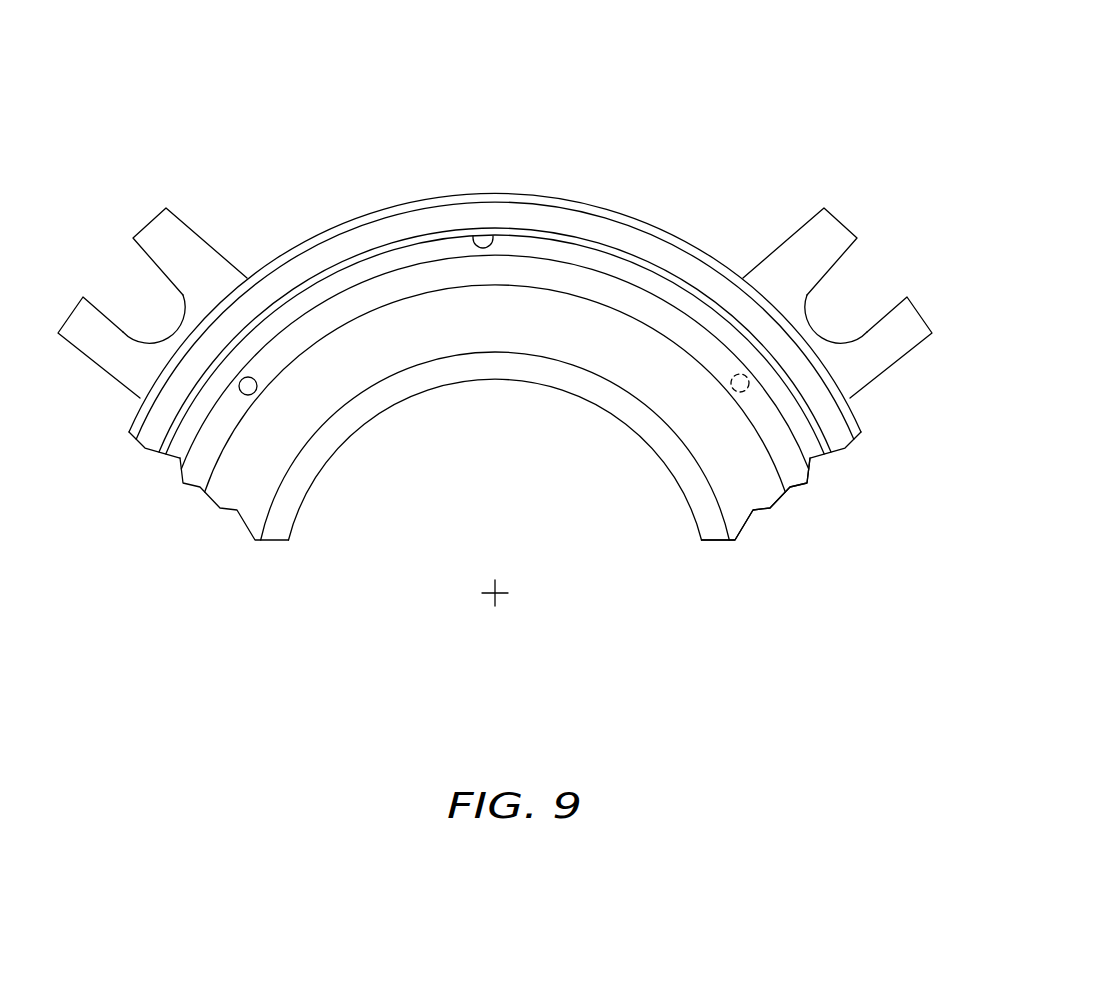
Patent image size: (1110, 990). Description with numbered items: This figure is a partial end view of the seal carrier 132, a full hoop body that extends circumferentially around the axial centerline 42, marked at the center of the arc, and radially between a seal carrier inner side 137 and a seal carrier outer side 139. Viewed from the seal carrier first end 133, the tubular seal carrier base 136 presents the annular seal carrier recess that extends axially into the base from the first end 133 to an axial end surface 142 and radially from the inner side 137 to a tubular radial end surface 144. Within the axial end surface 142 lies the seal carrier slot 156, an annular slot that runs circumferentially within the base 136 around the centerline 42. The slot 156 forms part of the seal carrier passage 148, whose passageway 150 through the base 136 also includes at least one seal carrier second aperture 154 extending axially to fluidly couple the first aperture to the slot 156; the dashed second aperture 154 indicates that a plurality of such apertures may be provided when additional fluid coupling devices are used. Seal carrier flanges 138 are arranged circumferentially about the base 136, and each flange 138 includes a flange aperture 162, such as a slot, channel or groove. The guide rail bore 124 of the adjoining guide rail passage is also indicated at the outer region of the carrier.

The seal carrier 132 is at (515, 337).
The guide rail bore 124 is at (847, 410).
The seal carrier slot 156 is at (783, 447).
The axial end surface 142 is at (325, 403).
The seal carrier inner side 137 is at (647, 448).
The seal carrier first end 133 is at (150, 435).
The seal carrier base 136 is at (181, 495).
The seal carrier passage 148 is at (806, 488).
The passageway 150 is at (756, 499).
The radial end surface 144 is at (491, 238).
The seal carrier second aperture 154 is at (258, 387).
The seal carrier flange 138 is at (193, 216).
The flange aperture 162 is at (126, 268).
The seal carrier outer side 139 is at (917, 301).
The axial centerline 42 is at (498, 596).